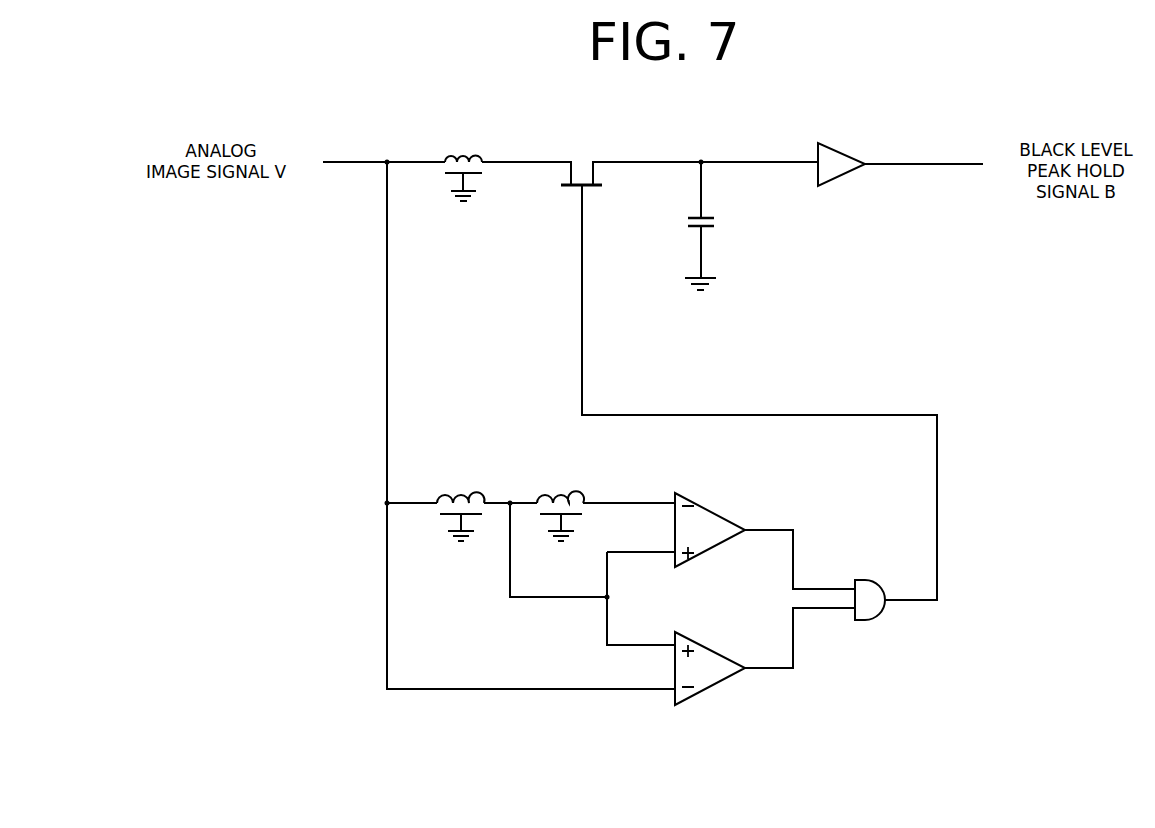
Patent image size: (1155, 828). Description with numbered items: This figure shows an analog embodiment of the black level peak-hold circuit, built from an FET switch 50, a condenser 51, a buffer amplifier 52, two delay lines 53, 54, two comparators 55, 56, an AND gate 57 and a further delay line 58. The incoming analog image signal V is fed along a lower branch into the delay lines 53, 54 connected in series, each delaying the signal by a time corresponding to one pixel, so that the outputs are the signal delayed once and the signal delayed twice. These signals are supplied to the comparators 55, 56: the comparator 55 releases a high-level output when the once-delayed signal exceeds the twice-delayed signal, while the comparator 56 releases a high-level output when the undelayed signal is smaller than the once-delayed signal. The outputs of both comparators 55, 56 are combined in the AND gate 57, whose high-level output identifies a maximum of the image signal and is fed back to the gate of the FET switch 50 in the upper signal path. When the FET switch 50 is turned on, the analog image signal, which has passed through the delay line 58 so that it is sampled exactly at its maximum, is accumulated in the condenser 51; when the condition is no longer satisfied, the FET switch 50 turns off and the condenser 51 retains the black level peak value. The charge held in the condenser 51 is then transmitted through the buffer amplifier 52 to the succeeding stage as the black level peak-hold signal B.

The FET switch 50 is at (583, 168).
The condenser 51 is at (714, 222).
The buffer amplifier 52 is at (834, 152).
The delay line 53 is at (459, 494).
The delay line 54 is at (558, 494).
The comparator 55 is at (713, 510).
The comparator 56 is at (708, 690).
The AND gate 57 is at (866, 621).
The delay line 58 is at (463, 156).